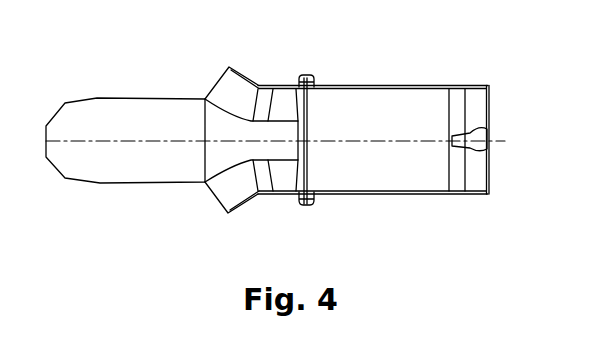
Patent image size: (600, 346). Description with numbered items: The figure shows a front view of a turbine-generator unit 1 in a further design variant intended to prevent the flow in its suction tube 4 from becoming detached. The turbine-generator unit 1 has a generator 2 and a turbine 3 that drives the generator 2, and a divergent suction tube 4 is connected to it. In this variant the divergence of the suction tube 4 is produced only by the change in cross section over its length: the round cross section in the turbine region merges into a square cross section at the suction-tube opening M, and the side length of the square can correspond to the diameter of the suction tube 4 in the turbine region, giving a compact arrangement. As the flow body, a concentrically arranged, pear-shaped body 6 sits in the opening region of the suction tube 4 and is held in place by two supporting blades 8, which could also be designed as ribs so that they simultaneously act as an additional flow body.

The turbine-generator unit 1 is at (290, 139).
The generator 2 is at (153, 122).
The turbine 3 is at (283, 107).
The suction tube 4 is at (380, 85).
The pear-shaped body 6 is at (487, 153).
The supporting blades 8 is at (458, 105).
The suction-tube opening M is at (490, 157).